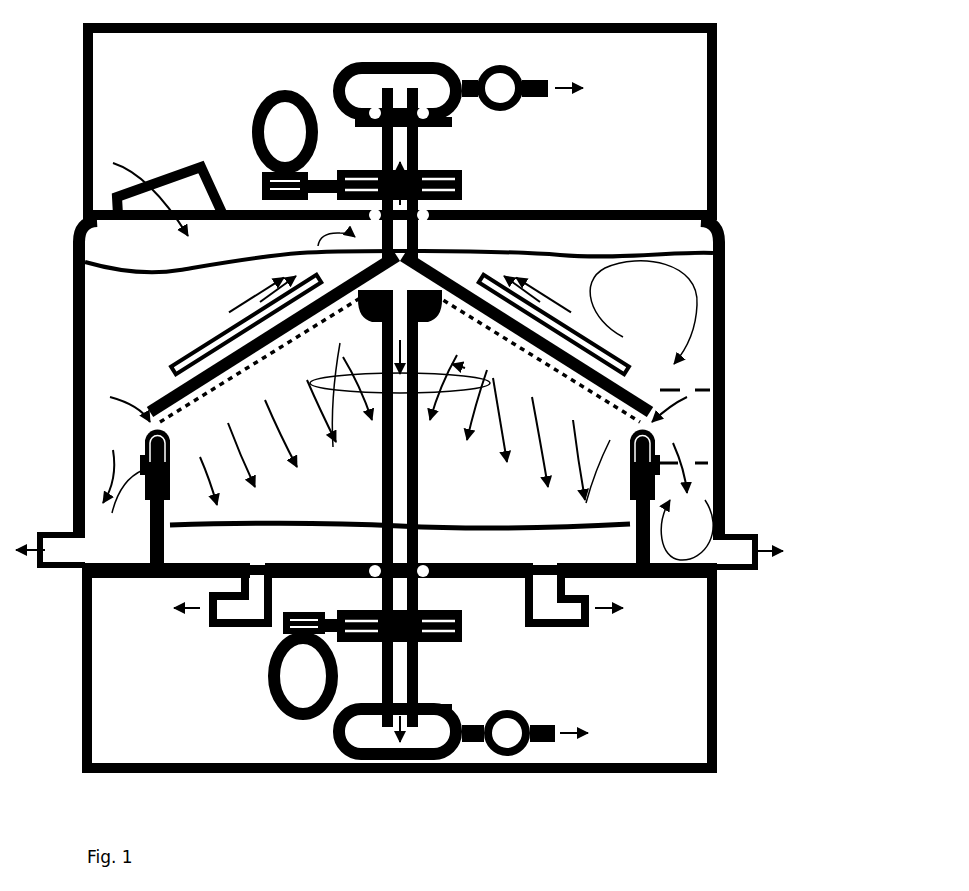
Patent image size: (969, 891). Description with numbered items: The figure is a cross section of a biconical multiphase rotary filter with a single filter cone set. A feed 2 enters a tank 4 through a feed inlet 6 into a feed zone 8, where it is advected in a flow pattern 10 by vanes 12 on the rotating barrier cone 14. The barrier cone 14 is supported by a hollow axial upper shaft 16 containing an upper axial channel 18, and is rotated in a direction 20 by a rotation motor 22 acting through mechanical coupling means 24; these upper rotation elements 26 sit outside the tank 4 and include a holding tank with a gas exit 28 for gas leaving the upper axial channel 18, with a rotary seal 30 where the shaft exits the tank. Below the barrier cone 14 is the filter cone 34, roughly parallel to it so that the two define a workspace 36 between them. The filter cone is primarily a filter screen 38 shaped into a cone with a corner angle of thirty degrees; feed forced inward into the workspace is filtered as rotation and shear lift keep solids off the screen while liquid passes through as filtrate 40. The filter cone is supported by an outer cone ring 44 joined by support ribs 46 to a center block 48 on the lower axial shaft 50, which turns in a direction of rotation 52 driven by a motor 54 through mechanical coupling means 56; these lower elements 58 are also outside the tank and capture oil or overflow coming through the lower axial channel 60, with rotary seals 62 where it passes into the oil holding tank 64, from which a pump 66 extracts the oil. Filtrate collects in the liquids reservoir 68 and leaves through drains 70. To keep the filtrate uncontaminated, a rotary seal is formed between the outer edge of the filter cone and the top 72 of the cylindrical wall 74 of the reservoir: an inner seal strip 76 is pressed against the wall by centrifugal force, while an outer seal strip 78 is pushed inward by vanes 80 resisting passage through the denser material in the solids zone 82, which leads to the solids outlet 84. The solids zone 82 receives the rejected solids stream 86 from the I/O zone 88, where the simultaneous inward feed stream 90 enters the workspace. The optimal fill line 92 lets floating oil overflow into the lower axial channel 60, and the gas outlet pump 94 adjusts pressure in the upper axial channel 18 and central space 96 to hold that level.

The feed 2 is at (133, 167).
The tank 4 is at (77, 253).
The feed inlet 6 is at (157, 245).
The feed zone 8 is at (110, 327).
The flow pattern 10 is at (688, 292).
The vanes 12 is at (200, 347).
The barrier cone 14 is at (170, 397).
The upper shaft 16 is at (420, 155).
The upper axial channel 18 is at (397, 156).
The direction of rotation 20 is at (455, 247).
The rotation motor 22 is at (273, 126).
The mechanical coupling means 24 is at (463, 187).
The upper rotation elements 26 is at (705, 95).
The gas exit 28 is at (370, 60).
The rotary seal 30 is at (433, 122).
The filter cone 34 is at (245, 378).
The workspace 36 is at (208, 393).
The filter screen 38 is at (537, 388).
The filtrate 40 is at (232, 428).
The outer cone ring 44 is at (627, 428).
The support ribs 46 is at (585, 402).
The center block 48 is at (440, 290).
The lower axial shaft 50 is at (418, 446).
The direction of rotation 52 is at (348, 407).
The motor 54 is at (287, 679).
The mechanical coupling means 56 is at (462, 621).
The lower elements 58 is at (710, 673).
The lower axial channel 60 is at (403, 492).
The rotary seals 62 is at (378, 556).
The oil holding tank 64 is at (337, 733).
The pump 66 is at (502, 730).
The liquids reservoir 68 is at (315, 500).
The drains 70 is at (244, 612).
The top of the cylindrical wall 72 is at (633, 450).
The cylindrical wall 74 is at (633, 505).
The inner seal strip 76 is at (167, 483).
The outer seal strip 78 is at (143, 440).
The vanes 80 is at (124, 507).
The solids zone 82 is at (723, 517).
The solids outlet 84 is at (62, 540).
The rejected solids stream 86 is at (108, 468).
The I/O zone 88 is at (703, 450).
The inward feed stream 90 is at (655, 398).
The optimal line for filling the workspace 92 is at (440, 306).
The gas outlet pump 94 is at (493, 82).
The central space 96 is at (315, 246).